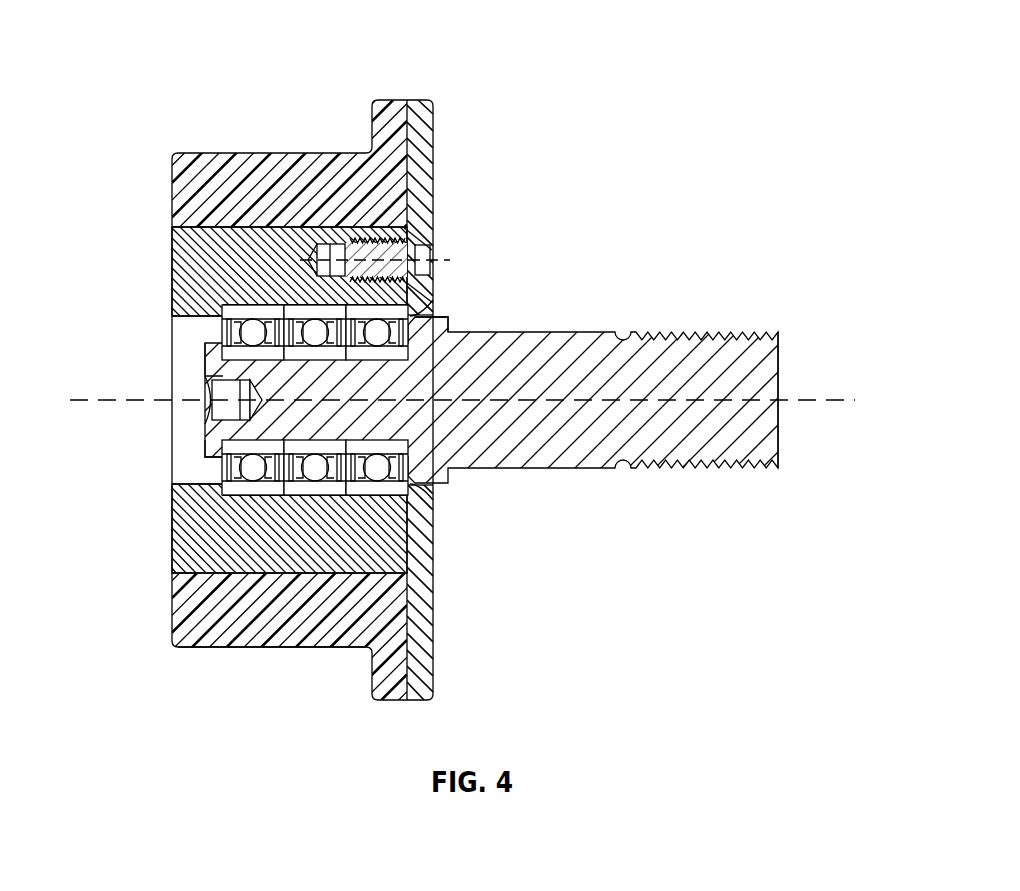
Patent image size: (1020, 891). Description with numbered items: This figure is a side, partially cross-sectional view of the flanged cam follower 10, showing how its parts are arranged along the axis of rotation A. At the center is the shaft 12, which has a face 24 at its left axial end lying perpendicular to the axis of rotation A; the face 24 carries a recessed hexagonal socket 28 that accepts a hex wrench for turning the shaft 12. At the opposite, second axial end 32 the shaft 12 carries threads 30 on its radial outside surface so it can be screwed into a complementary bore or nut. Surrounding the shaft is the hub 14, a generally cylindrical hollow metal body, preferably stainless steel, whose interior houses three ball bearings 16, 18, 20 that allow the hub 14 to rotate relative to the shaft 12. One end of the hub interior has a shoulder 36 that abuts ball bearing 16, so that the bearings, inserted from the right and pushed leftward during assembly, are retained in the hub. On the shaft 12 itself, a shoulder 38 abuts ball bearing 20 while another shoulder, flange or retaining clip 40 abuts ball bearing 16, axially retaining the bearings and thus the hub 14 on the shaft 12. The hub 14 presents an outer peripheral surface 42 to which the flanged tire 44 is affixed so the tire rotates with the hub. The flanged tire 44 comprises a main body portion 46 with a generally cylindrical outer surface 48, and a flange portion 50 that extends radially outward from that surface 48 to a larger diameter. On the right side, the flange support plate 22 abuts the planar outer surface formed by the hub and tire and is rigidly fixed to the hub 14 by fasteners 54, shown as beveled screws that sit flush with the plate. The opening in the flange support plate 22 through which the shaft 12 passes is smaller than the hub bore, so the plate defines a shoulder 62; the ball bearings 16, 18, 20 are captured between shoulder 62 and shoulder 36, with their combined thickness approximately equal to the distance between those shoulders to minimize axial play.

The flanged cam follower 10 is at (144, 54).
The shaft 12 is at (545, 345).
The hub 14 is at (188, 255).
The ball bearing 16 is at (255, 487).
The ball bearing 18 is at (315, 497).
The ball bearing 20 is at (407, 527).
The flange support plate 22 is at (425, 662).
The face 24 is at (208, 383).
The recessed hexagonal socket 28 is at (208, 410).
The threads 30 is at (725, 332).
The second axial end 32 is at (778, 355).
The shoulder 36 is at (195, 300).
The shoulder 38 is at (445, 322).
The shoulder, flange or retaining clip 40 is at (210, 450).
The outer peripheral surface 42 is at (280, 225).
The flanged tire 44 is at (320, 160).
The main body portion 46 is at (188, 607).
The generally cylindrical outer surface 48 is at (210, 648).
The flange portion 50 is at (384, 115).
The fasteners 54 is at (430, 240).
The shoulder 62 is at (410, 490).
The axis of rotation A is at (830, 405).